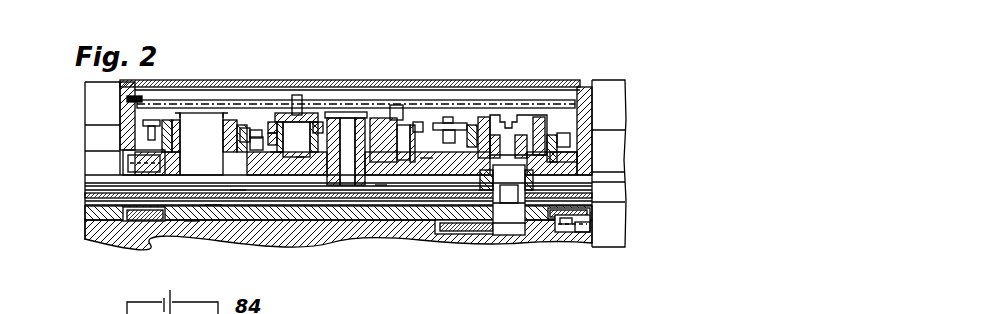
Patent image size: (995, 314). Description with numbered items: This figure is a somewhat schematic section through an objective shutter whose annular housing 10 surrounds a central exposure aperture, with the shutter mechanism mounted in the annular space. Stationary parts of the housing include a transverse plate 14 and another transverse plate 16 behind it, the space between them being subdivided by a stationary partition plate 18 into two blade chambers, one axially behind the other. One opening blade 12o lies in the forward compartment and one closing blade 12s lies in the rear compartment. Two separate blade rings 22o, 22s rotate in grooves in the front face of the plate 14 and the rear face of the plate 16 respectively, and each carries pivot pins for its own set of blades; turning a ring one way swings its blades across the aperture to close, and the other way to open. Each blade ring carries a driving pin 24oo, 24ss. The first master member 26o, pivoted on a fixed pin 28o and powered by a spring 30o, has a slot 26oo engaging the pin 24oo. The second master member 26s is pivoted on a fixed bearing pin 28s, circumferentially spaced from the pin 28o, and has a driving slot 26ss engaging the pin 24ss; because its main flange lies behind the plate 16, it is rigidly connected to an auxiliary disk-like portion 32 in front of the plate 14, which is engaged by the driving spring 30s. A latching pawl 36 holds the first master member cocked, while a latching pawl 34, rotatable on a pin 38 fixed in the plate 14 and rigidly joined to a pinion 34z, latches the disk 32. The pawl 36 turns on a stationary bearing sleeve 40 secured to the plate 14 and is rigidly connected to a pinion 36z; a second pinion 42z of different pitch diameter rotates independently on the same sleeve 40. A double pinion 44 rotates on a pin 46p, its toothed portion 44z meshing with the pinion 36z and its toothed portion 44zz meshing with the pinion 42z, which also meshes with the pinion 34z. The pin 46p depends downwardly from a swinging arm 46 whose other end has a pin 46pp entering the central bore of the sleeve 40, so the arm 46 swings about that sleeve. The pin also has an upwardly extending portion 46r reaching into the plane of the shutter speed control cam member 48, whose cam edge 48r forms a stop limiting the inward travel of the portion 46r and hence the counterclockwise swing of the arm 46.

The housing 10 is at (123, 230).
The opening blade 12o is at (115, 191).
The closing blade 12s is at (115, 211).
The transverse plate 14 is at (238, 190).
The transverse plate 16 is at (192, 222).
The partition plate 18 is at (213, 205).
The blade ring 22o is at (115, 184).
The blade ring 22s is at (138, 220).
The driving pin 24oo is at (118, 165).
The driving pin 24ss is at (569, 226).
The first master member 26o is at (176, 117).
The slot 26oo is at (118, 152).
The second master member 26s is at (477, 233).
The driving slot 26ss is at (588, 229).
The fixed pin 28o is at (200, 125).
The fixed bearing pin 28s is at (508, 220).
The spring 30o is at (120, 115).
The driving spring 30s is at (440, 122).
The auxiliary portion 32 is at (483, 117).
The latching pawl 34 is at (427, 160).
The pinion 34z is at (417, 120).
The latching pawl 36 is at (277, 142).
The pinion 36z is at (381, 190).
The pin 38 is at (396, 105).
The bearing sleeve 40 is at (373, 162).
The second pinion 42z is at (367, 112).
The double pinion 44 is at (262, 150).
The toothed portion 44z is at (276, 157).
The toothed portion 44zz is at (272, 127).
The arm 46 is at (318, 112).
The pin 46p is at (300, 158).
The pin 46pp is at (346, 125).
The upwardly extending portion 46r is at (296, 97).
The shutter speed control cam member 48 is at (158, 100).
The cam edge 48r is at (253, 100).